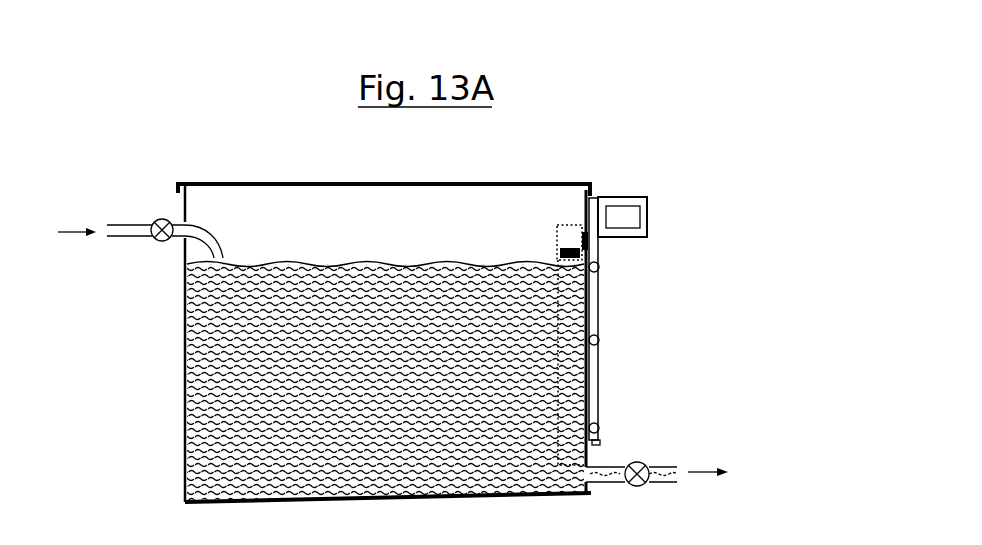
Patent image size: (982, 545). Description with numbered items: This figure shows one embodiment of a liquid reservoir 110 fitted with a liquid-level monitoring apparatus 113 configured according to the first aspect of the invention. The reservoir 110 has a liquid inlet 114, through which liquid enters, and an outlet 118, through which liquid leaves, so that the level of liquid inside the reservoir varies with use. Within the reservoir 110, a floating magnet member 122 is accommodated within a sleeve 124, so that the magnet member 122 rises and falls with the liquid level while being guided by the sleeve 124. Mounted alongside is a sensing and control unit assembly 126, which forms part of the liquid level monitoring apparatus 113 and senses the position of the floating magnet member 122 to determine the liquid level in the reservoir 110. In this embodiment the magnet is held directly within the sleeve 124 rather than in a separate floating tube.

The liquid reservoir 110 is at (171, 420).
The liquid level monitoring apparatus 113 is at (630, 283).
The liquid inlet 114 is at (123, 238).
The outlet 118 is at (660, 457).
The floating magnet member 122 is at (563, 247).
The sleeve 124 is at (552, 325).
The sensing and control unit assembly 126 is at (660, 182).